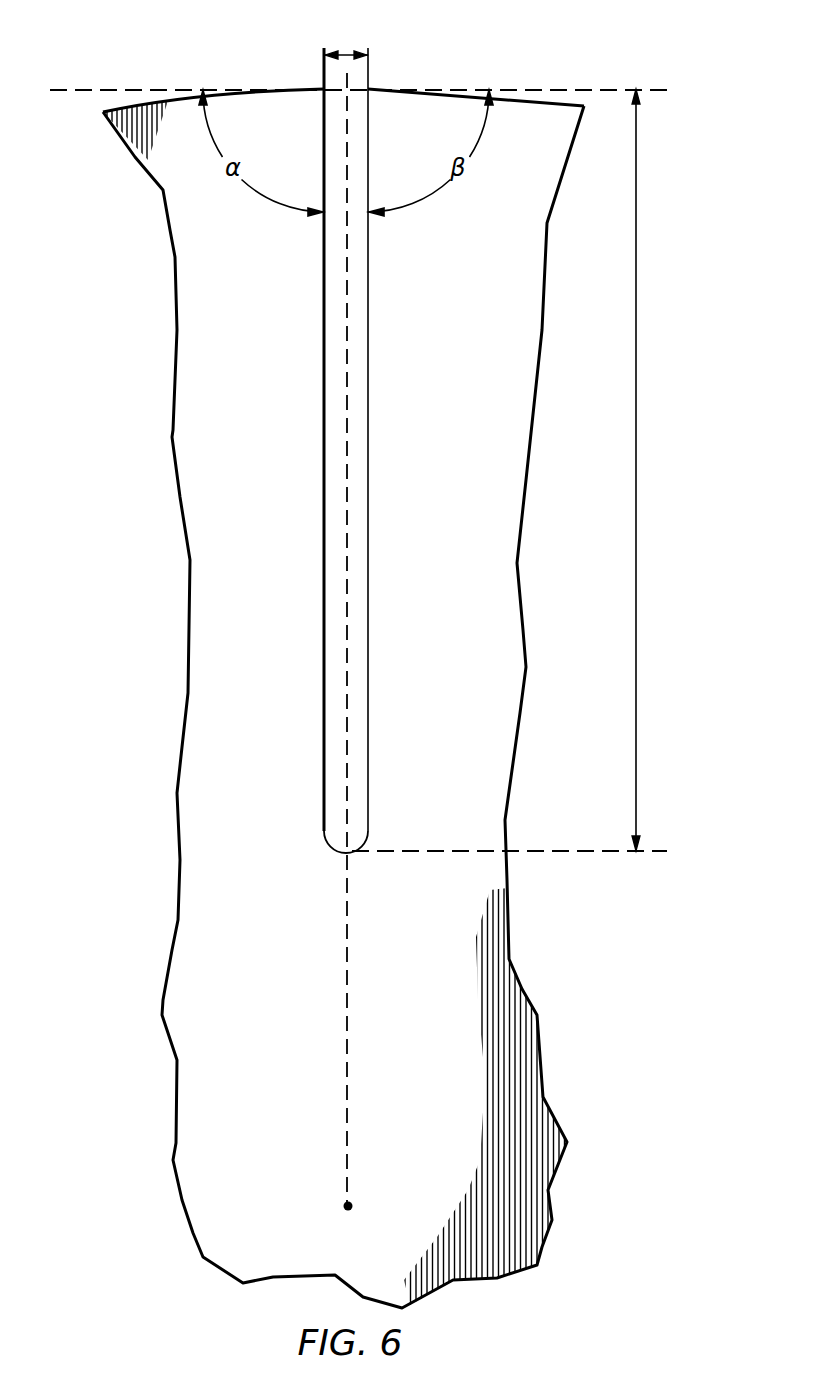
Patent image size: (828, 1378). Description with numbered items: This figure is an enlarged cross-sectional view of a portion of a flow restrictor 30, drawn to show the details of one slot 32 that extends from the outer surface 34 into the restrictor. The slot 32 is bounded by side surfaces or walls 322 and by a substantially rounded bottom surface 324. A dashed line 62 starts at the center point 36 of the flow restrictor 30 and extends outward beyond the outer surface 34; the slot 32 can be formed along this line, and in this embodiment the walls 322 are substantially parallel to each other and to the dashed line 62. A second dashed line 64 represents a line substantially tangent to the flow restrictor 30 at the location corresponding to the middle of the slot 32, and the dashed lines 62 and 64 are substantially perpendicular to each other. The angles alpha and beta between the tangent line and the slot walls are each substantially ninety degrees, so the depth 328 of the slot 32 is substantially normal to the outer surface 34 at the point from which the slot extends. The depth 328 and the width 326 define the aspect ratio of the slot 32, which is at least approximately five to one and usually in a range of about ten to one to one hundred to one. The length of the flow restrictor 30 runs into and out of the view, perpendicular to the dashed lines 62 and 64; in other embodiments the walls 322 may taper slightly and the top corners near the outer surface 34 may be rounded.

The flow restrictor 30 is at (417, 1138).
The slot 32 is at (350, 478).
The outer surface 34 is at (545, 100).
The center point 36 is at (353, 1207).
The dashed line 62 is at (346, 1040).
The dashed line 64 is at (83, 89).
The walls 322 is at (370, 327).
The bottom surface 324 is at (337, 854).
The width 326 is at (348, 47).
The depth 328 is at (637, 477).